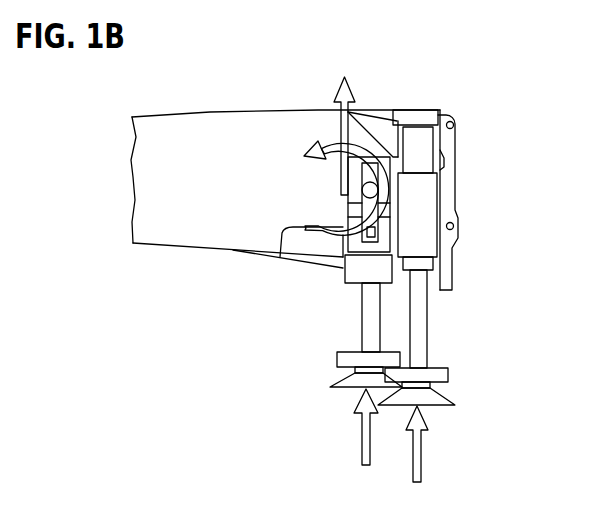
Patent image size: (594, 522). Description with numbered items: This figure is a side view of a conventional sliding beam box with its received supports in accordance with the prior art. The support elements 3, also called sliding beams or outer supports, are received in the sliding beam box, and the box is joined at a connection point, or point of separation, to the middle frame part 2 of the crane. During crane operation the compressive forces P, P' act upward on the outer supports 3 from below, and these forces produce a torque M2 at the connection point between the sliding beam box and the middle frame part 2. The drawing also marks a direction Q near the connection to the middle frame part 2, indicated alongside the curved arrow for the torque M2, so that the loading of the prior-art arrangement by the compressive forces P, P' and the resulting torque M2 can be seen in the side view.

The middle frame part 2 is at (225, 192).
The support elements 3 is at (370, 318).
The torque M2 is at (319, 142).
The lifting direction Q is at (340, 128).
The compressive force P is at (441, 456).
The compressive force P' is at (342, 430).